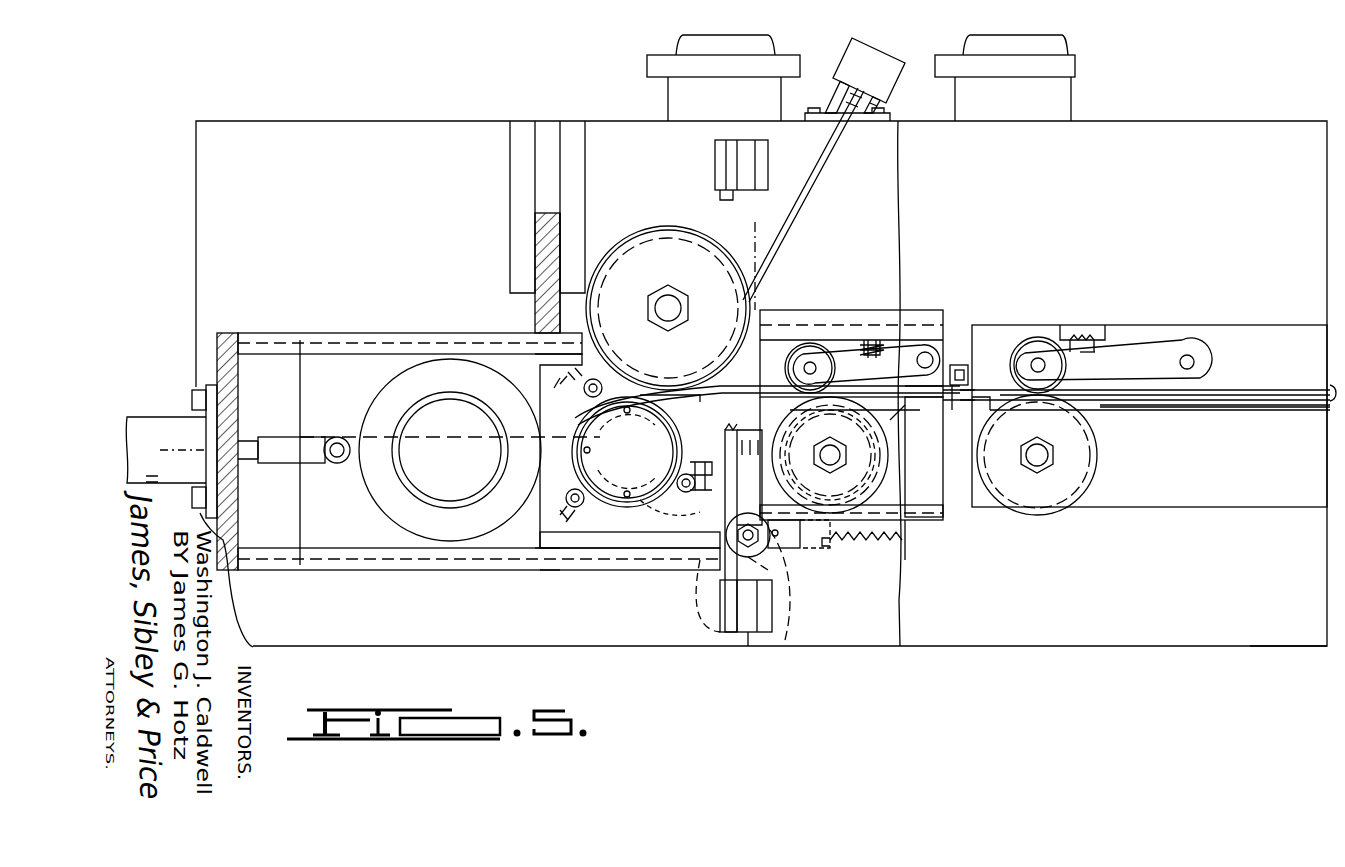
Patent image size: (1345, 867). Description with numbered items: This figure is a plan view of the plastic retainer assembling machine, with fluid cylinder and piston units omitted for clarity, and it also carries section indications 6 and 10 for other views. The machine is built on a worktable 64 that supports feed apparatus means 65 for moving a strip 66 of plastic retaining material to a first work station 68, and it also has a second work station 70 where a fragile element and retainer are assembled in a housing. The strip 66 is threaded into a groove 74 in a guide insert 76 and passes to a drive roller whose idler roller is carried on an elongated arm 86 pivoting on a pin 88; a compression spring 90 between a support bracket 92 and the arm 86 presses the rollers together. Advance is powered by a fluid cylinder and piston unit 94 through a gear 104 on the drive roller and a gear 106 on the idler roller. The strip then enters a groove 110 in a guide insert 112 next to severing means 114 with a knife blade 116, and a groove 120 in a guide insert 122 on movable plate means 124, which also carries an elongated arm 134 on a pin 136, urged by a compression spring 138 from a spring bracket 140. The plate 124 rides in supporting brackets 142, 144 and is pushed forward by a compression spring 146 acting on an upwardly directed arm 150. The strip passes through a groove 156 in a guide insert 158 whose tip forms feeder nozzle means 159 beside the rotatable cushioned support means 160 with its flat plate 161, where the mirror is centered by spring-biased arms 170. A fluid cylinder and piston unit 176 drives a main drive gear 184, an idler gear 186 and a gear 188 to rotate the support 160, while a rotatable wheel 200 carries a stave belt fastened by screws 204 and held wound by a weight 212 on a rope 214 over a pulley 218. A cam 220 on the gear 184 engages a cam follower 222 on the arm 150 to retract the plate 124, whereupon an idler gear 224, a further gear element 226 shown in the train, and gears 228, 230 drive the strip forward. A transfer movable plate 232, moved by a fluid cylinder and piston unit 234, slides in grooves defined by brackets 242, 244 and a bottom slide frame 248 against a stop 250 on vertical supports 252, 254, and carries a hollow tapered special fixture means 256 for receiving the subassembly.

The section line 6 is at (152, 470).
The section line 10 is at (808, 226).
The worktable 64 is at (1292, 650).
The feed apparatus means 65 is at (975, 512).
The strip of plastic retaining material 66 is at (1333, 380).
The first work station 68 is at (612, 568).
The second work station 70 is at (432, 552).
The groove 74 is at (1200, 440).
The guide insert 76 is at (1258, 410).
The elongated arm 86 is at (1120, 350).
The pin 88 is at (1195, 358).
The compression spring 90 is at (1085, 340).
The support bracket 92 is at (1073, 322).
The fluid cylinder and piston unit 94 is at (1078, 102).
The gear 104 is at (1098, 460).
The gear 106 is at (1033, 350).
The groove 110 is at (978, 397).
The guide insert 112 is at (1010, 410).
The severing means 114 is at (975, 350).
The knife blade 116 is at (956, 400).
The groove 120 is at (890, 456).
The guide insert 122 is at (895, 420).
The movable plate means 124 is at (920, 525).
The elongated arm 134 is at (940, 400).
The pin 136 is at (950, 330).
The compression spring 138 is at (912, 345).
The spring bracket 140 is at (866, 340).
The supporting bracket 142 is at (890, 548).
The supporting bracket 144 is at (805, 310).
The compression spring 146 is at (905, 548).
The upwardly directed arm 150 is at (810, 575).
The groove 156 is at (738, 402).
The guide insert 158 is at (768, 385).
The feeder nozzle means 159 is at (668, 392).
The rotatable cushioned support means 160 is at (632, 500).
The flat plate 161 is at (627, 452).
The arms 170 is at (566, 398).
The fluid cylinder and piston unit 176 is at (668, 97).
The main drive gear 184 is at (700, 590).
The idler gear 186 is at (660, 548).
The gear 188 is at (505, 437).
The rotatable wheel 200 is at (672, 270).
The screws 204 is at (545, 468).
The weight 212 is at (862, 50).
The rope 214 is at (812, 180).
The pulley 218 is at (885, 90).
The cam 220 is at (768, 612).
The cam follower 222 is at (788, 600).
The idler gear 224 is at (885, 494).
The member 226 is at (870, 432).
The gear 228 is at (880, 478).
The gear 230 is at (822, 340).
The movable plate 232 is at (315, 499).
The fluid cylinder and piston unit 234 is at (182, 415).
The bracket 242 is at (352, 334).
The bracket 244 is at (348, 572).
The bottom slide frame 248 is at (535, 555).
The stop 250 is at (728, 528).
The vertical support 252 is at (755, 630).
The vertical support 254 is at (720, 168).
The special fixture means 256 is at (502, 372).